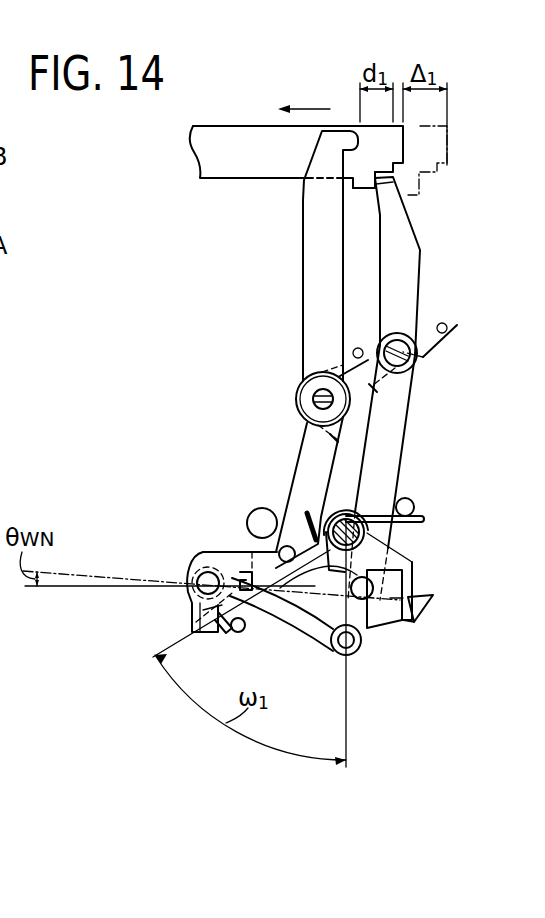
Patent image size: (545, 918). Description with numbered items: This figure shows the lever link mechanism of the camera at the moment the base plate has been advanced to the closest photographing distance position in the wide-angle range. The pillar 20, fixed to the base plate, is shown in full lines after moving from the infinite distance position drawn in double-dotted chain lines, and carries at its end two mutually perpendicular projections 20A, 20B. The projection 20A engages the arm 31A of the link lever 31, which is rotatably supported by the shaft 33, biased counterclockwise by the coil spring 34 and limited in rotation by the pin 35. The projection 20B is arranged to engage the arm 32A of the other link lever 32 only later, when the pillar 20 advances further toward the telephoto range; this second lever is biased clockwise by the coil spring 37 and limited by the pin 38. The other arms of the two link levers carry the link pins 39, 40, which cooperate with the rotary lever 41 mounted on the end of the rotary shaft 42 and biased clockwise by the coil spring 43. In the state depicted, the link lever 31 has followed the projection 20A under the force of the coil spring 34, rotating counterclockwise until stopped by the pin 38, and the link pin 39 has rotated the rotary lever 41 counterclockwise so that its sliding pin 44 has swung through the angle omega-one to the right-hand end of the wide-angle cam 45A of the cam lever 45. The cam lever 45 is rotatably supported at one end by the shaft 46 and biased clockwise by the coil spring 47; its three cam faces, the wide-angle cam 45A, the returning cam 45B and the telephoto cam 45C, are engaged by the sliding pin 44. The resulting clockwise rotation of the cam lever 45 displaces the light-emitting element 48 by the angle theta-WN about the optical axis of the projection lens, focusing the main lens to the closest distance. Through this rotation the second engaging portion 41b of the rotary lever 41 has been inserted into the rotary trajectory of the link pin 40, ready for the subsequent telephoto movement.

The pillar 20 is at (250, 126).
The projection 20A is at (357, 190).
The projection 20B is at (428, 165).
The link lever 31 is at (393, 428).
The arm 31A is at (413, 272).
The link lever 32 is at (312, 445).
The arm 32A is at (317, 273).
The shaft 33 is at (420, 362).
The coil spring 34 is at (457, 332).
The pin 35 is at (255, 510).
The coil spring 37 is at (347, 348).
The pin 38 is at (413, 503).
The link pin 39 is at (312, 615).
The link pin 40 is at (308, 522).
The rotary lever 41 is at (395, 562).
The second engaging portion 41b is at (335, 560).
The rotary shaft 42 is at (344, 514).
The coil spring 43 is at (426, 523).
The sliding pin 44 is at (357, 652).
The cam lever 45 is at (434, 595).
The wide-angle cam 45A is at (317, 640).
The returning cam 45B is at (393, 633).
The telephoto cam 45C is at (422, 615).
The shaft 46 is at (210, 575).
The coil spring 47 is at (220, 640).
The light-emitting element 48 is at (412, 628).